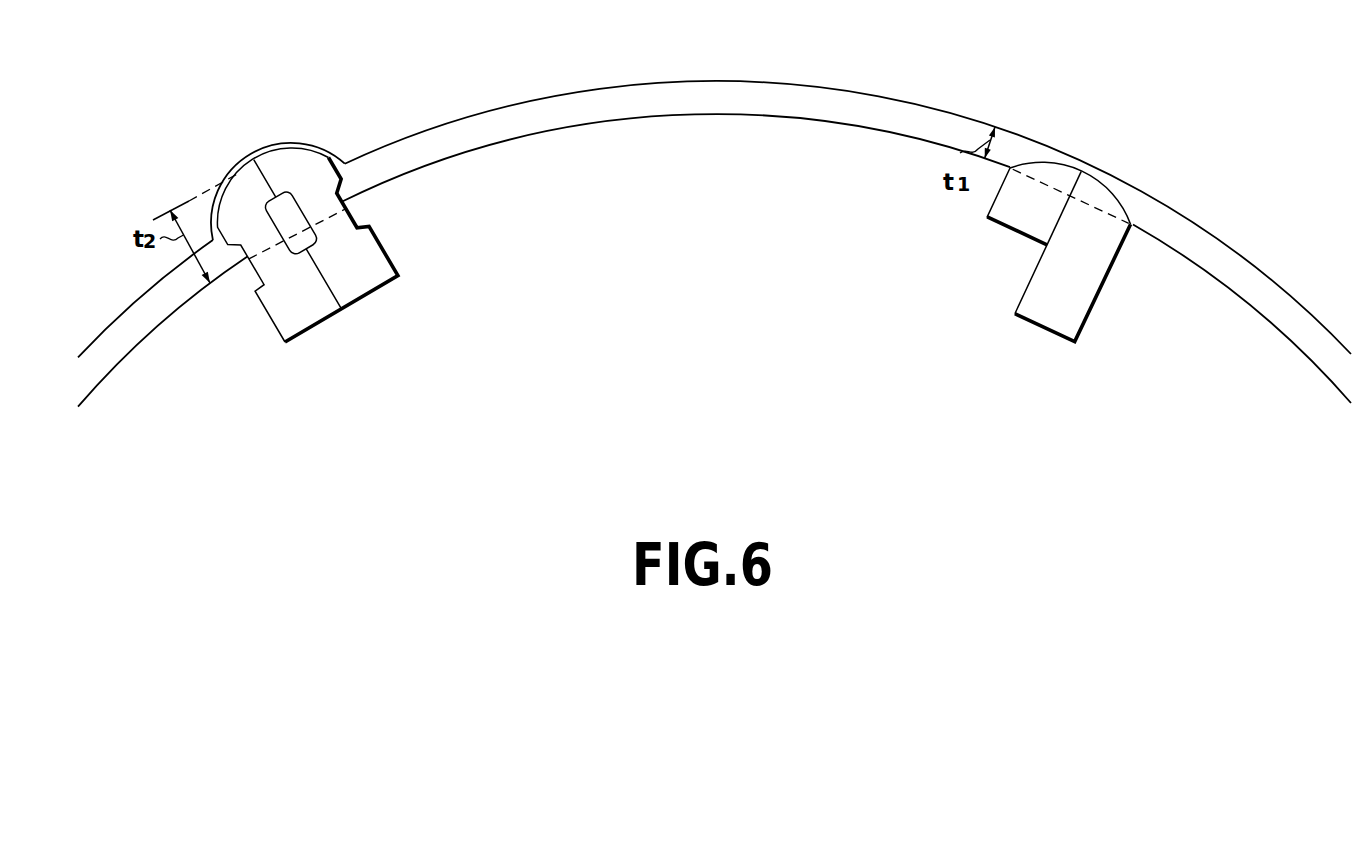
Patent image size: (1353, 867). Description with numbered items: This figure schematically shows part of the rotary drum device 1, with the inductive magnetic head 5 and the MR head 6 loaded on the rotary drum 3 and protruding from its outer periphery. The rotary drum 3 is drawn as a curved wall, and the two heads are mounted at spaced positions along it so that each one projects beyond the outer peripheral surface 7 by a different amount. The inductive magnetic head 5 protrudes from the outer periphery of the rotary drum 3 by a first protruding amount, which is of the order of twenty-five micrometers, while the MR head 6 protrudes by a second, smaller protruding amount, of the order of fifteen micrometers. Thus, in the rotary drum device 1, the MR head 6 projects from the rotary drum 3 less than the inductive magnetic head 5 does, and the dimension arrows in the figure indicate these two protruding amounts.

The rotary drum device 1 is at (1192, 154).
The rotary drum 3 is at (1220, 323).
The inductive magnetic head 5 is at (357, 280).
The MR head 6 is at (1045, 308).
The outer peripheral surface 7 is at (895, 96).